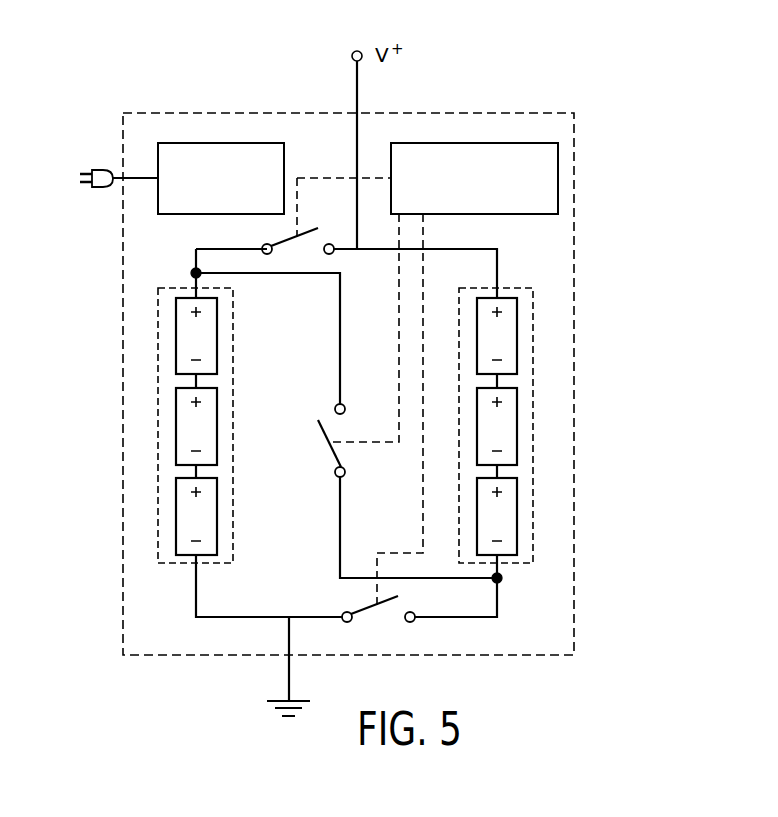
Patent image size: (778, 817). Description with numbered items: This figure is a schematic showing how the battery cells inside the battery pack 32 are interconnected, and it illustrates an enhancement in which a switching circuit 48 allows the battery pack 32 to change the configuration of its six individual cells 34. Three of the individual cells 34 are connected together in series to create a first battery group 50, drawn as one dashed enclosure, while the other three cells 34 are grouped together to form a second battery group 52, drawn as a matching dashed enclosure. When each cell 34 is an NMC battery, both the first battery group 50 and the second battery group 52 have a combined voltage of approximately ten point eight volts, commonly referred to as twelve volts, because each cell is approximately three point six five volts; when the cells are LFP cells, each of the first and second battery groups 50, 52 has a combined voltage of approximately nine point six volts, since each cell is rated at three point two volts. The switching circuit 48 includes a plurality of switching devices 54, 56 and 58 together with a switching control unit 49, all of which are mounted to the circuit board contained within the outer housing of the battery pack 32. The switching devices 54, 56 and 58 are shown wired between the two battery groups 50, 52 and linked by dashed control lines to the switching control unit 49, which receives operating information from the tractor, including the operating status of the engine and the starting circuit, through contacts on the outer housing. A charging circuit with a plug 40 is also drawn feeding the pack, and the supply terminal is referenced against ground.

The battery pack 32 is at (603, 247).
The individual cells 34 is at (176, 515).
The power plug 40 is at (92, 172).
The switching circuit 48 is at (473, 138).
The switching control unit 49 is at (558, 178).
The first battery group 50 is at (156, 462).
The second battery group 52 is at (534, 462).
The switching device 54 is at (290, 242).
The switching device 56 is at (372, 606).
The switching device 58 is at (320, 437).